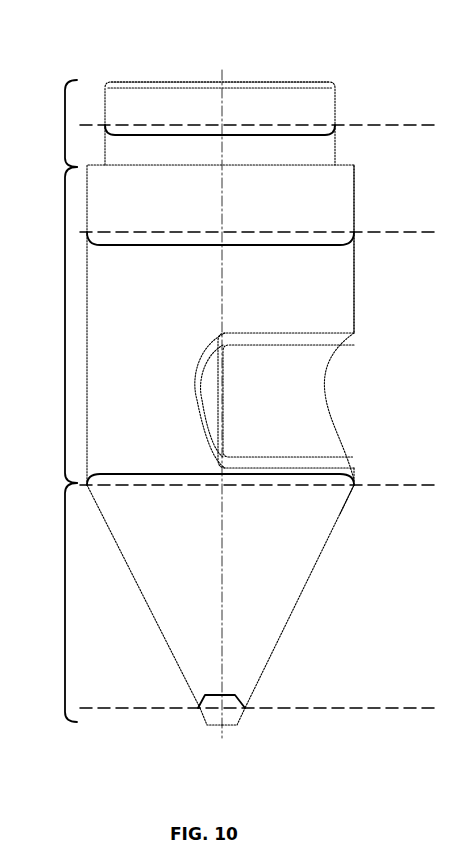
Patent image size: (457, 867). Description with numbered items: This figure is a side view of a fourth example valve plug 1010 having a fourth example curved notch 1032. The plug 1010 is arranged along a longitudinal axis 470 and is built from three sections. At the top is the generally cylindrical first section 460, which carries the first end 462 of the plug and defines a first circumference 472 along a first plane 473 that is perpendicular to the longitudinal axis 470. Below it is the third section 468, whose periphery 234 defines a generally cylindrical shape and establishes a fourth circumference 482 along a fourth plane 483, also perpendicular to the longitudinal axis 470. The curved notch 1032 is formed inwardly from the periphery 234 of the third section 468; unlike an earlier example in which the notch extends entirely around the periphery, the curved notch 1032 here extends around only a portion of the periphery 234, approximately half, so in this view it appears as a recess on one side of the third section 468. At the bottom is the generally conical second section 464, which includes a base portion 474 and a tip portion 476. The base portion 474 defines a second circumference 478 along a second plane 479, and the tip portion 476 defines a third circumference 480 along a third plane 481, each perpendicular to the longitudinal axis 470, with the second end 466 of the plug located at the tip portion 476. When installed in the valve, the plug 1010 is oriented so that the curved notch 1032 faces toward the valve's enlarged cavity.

The valve plug 1010 is at (343, 68).
The first section 460 is at (65, 125).
The first end 462 is at (252, 82).
The first circumference 472 is at (272, 137).
The first plane 473 is at (372, 125).
The third section 468 is at (65, 240).
The fourth circumference 482 is at (279, 247).
The fourth plane 483 is at (372, 232).
The periphery 234 is at (354, 292).
The curved notch 1032 is at (335, 437).
The second circumference 478 is at (140, 472).
The second plane 479 is at (375, 485).
The base portion 474 is at (355, 488).
The second section 464 is at (65, 598).
The longitudinal axis 470 is at (222, 630).
The third circumference 480 is at (237, 695).
The third plane 481 is at (350, 708).
The second end 466 is at (212, 724).
The tip portion 476 is at (240, 721).